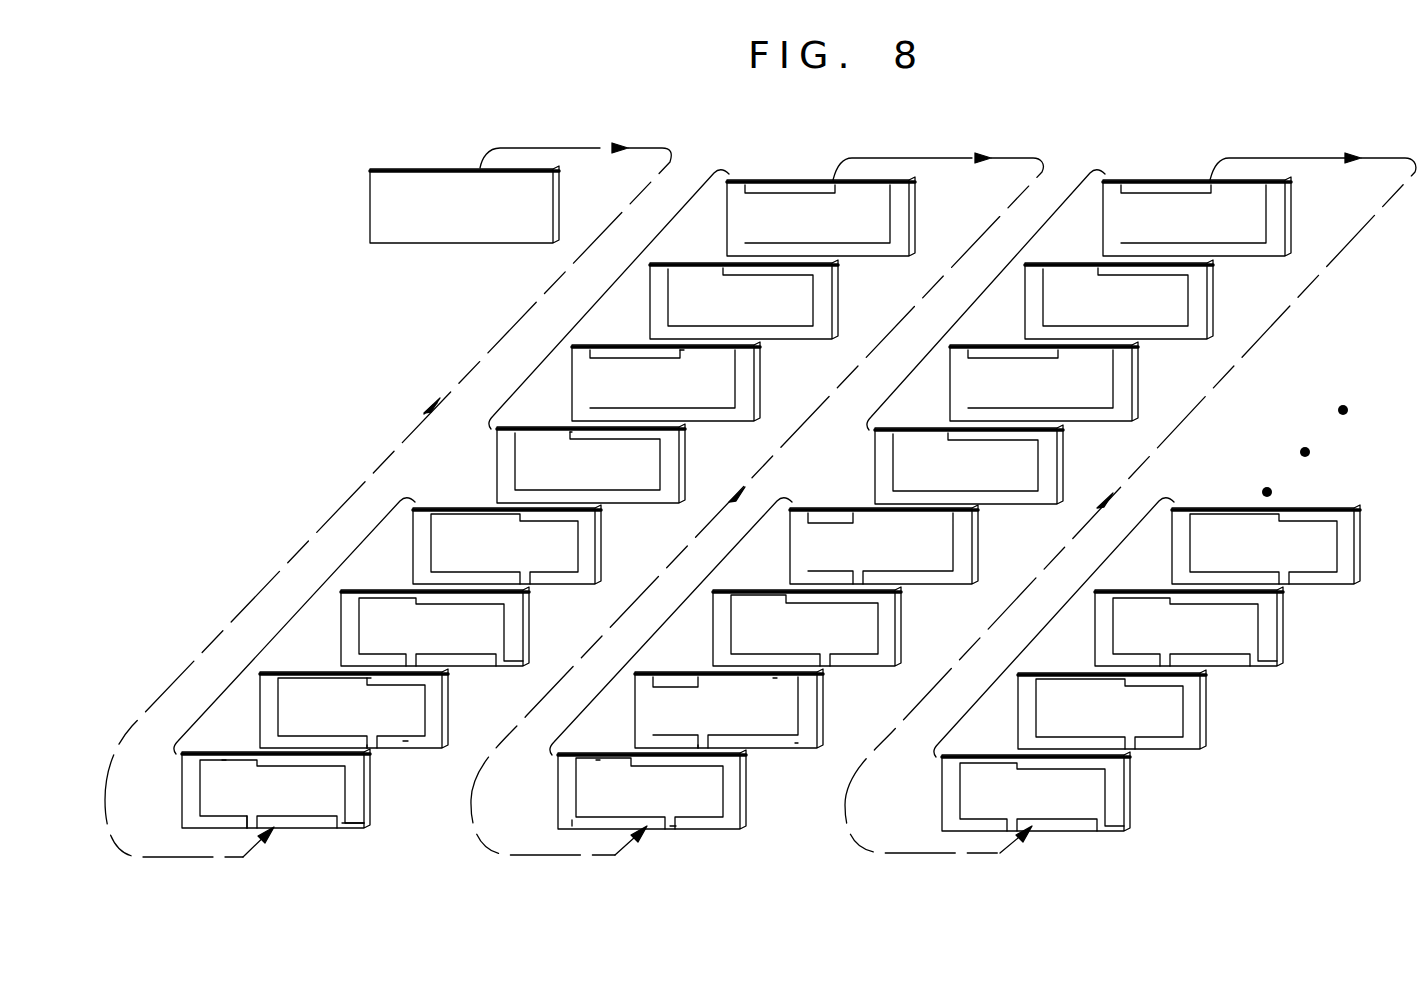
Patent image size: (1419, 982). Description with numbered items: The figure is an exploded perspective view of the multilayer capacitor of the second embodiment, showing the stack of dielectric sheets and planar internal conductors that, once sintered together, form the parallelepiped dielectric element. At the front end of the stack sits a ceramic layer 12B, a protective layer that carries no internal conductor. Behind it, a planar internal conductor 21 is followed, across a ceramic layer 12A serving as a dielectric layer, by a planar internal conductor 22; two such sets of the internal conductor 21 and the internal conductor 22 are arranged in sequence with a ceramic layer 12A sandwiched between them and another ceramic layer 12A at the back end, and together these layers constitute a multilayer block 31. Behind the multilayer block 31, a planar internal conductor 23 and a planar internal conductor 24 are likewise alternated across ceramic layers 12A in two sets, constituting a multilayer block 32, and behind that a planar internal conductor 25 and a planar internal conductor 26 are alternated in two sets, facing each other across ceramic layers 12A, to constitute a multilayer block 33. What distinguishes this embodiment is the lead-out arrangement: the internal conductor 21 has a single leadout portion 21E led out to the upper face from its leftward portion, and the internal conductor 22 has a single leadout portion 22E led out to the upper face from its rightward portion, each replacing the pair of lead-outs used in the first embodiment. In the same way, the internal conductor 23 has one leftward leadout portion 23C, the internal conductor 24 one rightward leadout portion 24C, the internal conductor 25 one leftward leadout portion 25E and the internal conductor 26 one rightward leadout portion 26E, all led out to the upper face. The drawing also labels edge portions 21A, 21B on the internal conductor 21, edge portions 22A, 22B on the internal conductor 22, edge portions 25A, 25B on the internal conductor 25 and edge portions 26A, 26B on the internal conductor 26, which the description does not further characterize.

The ceramic layer 12A is at (743, 372).
The ceramic layer 12B is at (503, 228).
The internal conductor 21 is at (490, 628).
The coil lead end of block 21 21A is at (352, 820).
The coil lead end of block 21 21B is at (245, 824).
The leadout portion 21E is at (223, 760).
The internal conductor 22 is at (568, 558).
The coil lead end of block 22 22A is at (403, 741).
The coil lead end of block 22 22B is at (287, 739).
The leadout portion 22E is at (425, 678).
The internal conductor 23 is at (802, 300).
The leadout portion 23C is at (537, 437).
The internal conductor 24 is at (880, 228).
The leadout portion 24C is at (712, 351).
The internal conductor 25 is at (880, 625).
The coil lead end of block 25 25A is at (672, 827).
The coil lead end of block 25 25B is at (573, 826).
The leadout portion 25E is at (598, 760).
The internal conductor 26 is at (943, 553).
The coil lead end of block 26 26A is at (795, 743).
The coil lead end of block 26 26B is at (700, 737).
The leadout portion 26E is at (777, 680).
The multilayer block 31 is at (298, 620).
The multilayer block 32 is at (609, 296).
The multilayer block 33 is at (676, 619).